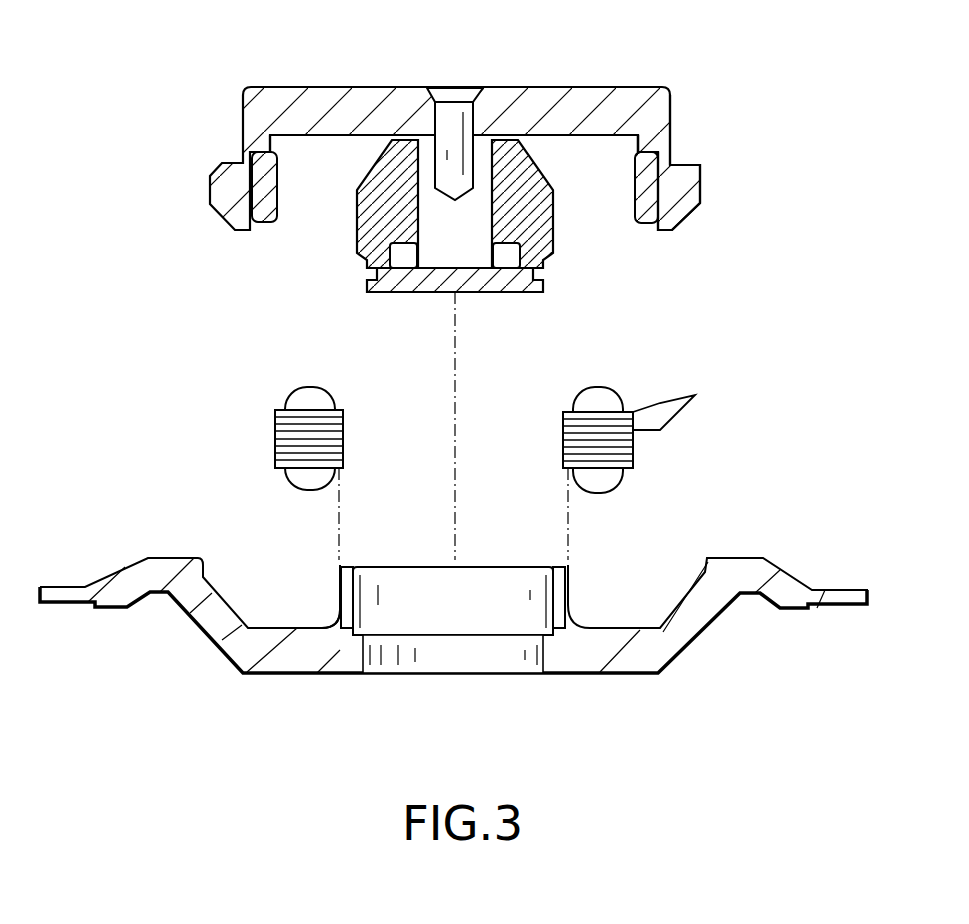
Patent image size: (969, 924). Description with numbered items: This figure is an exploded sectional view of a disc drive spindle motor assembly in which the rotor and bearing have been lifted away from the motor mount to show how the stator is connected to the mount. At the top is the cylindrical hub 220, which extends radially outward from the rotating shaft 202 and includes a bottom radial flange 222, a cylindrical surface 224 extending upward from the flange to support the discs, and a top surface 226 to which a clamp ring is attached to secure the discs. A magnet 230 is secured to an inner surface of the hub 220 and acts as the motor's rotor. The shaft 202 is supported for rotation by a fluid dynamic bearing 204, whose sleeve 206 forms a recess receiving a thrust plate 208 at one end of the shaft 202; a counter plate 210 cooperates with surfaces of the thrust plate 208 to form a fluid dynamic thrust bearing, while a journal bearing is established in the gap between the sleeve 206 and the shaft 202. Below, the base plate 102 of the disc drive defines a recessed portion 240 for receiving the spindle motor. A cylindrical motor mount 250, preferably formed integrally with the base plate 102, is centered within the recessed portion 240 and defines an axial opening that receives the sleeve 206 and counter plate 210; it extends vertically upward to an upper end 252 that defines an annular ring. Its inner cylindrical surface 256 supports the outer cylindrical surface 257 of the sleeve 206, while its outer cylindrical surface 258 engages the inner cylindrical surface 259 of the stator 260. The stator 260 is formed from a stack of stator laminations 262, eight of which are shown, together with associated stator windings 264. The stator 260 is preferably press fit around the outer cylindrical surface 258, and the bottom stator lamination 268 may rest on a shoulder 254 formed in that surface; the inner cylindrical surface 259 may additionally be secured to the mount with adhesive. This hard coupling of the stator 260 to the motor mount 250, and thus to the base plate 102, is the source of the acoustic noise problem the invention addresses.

The base plate 102 is at (790, 598).
The rotating shaft 202 is at (437, 250).
The fluid dynamic bearing 204 is at (441, 224).
The sleeve 206 is at (372, 222).
The thrust plate 208 is at (393, 260).
The counter plate 210 is at (493, 282).
The hub 220 is at (243, 107).
The bottom radial flange 222 is at (688, 162).
The cylindrical surface 224 is at (668, 108).
The top surface 226 is at (283, 87).
The magnet 230 is at (642, 197).
The recessed portion 240 is at (673, 648).
The cylindrical motor mount 250 is at (418, 633).
The upper end 252 is at (452, 588).
The shoulder 254 is at (567, 622).
The inner cylindrical surface 256 is at (377, 612).
The outer cylindrical surface 257 is at (560, 212).
The outer cylindrical surface 258 is at (337, 583).
The inner cylindrical surface 259 is at (283, 393).
The stator 260 is at (296, 417).
The stator laminations 262 is at (688, 405).
The stator windings 264 is at (653, 418).
The bottom stator lamination 268 is at (283, 468).